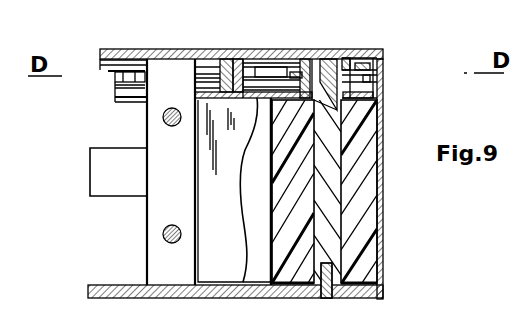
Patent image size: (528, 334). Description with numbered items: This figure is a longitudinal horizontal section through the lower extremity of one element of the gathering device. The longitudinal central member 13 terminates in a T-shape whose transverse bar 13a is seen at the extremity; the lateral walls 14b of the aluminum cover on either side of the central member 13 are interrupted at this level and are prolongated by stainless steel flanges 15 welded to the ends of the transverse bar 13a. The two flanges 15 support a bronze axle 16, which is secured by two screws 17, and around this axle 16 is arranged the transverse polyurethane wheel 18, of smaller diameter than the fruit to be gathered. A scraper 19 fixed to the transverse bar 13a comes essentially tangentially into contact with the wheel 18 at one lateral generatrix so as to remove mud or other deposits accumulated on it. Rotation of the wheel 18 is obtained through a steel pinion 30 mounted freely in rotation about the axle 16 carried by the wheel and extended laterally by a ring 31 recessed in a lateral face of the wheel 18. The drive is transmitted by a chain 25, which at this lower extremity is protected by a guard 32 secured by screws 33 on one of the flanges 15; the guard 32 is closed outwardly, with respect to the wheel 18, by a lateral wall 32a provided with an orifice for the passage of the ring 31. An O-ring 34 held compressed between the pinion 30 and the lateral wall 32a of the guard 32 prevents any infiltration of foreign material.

The central member 13 is at (90, 170).
The transverse bar 13a is at (157, 224).
The lateral wall 14b is at (95, 298).
The flange 15 is at (284, 52).
The axle 16 is at (331, 250).
The screw 17 is at (325, 287).
The wheel 18 is at (364, 214).
The scraper 19 is at (228, 264).
The chain 25 is at (110, 79).
The pinion 30 is at (354, 52).
The ring 31 is at (349, 102).
The guard 32 is at (384, 72).
The lateral wall 32a is at (246, 150).
The screw 33 is at (228, 54).
The O-ring 34 is at (384, 85).